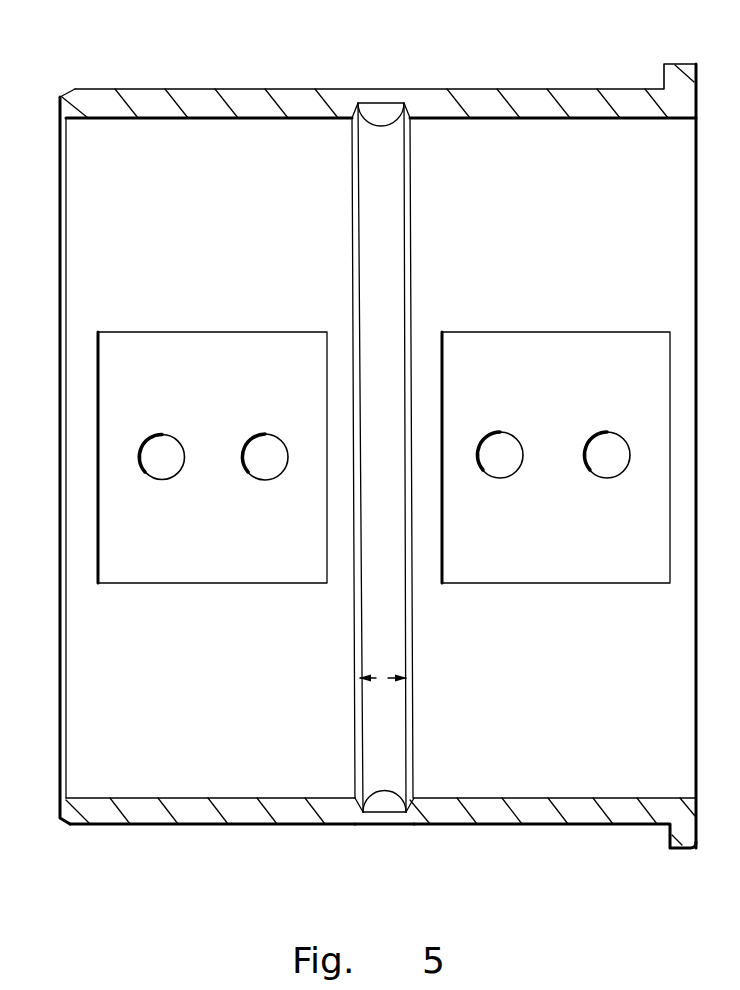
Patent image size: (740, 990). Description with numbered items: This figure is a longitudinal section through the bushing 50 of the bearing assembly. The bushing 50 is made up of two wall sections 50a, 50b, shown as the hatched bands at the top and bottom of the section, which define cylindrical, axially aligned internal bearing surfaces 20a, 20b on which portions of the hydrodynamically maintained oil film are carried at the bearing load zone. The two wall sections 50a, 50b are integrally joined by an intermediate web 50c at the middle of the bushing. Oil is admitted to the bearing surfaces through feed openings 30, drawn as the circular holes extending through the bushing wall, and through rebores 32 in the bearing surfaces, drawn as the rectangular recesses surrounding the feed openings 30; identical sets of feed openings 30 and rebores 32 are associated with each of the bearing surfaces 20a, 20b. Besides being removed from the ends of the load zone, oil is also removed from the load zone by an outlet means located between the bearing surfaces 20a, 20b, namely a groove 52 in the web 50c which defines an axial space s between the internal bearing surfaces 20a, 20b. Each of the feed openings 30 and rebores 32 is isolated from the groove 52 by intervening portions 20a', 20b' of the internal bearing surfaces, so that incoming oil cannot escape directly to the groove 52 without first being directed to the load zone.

The bushing 50 is at (378, 445).
The wall section 50a is at (497, 810).
The wall section 50b is at (246, 813).
The intermediate web 50c is at (406, 815).
The groove 52 is at (402, 804).
The internal bearing surface 20a is at (210, 458).
The internal bearing surface 20b is at (480, 458).
The intervening portion of the internal bearing surface 20a' is at (311, 457).
The intervening portion of the internal bearing surface 20b' is at (450, 457).
The feed openings 30 is at (262, 458).
The rebores 32 is at (250, 568).
The axial space s is at (388, 680).